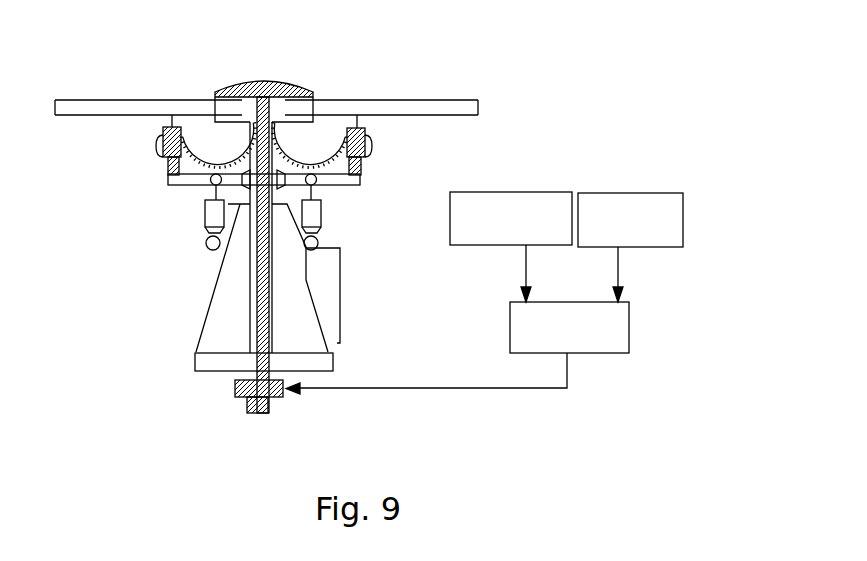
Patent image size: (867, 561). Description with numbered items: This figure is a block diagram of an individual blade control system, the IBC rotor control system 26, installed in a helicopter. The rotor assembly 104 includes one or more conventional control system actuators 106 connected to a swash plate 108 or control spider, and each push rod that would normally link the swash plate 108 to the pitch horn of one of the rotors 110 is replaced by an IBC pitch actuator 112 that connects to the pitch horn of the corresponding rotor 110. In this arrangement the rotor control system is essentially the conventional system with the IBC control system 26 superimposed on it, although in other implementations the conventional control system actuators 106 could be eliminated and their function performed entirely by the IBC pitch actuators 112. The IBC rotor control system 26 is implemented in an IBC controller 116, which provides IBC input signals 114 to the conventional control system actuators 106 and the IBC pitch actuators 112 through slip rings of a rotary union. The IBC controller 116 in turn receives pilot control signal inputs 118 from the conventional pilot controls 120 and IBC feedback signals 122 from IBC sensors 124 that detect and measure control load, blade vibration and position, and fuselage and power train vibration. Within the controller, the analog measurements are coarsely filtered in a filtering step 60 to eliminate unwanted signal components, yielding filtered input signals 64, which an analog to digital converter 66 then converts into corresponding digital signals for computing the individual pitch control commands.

The IBC rotor control system 26 is at (740, 171).
The filtering step 60 is at (247, 318).
The filtered input signals 64 is at (307, 433).
The analog to digital converter 66 is at (297, 436).
The rotor assembly 104 is at (477, 155).
The control system actuators 106 is at (210, 222).
The swash plate 108 is at (343, 187).
The rotors 110 is at (137, 110).
The IBC pitch actuator 112 is at (163, 153).
The IBC input signals 114 is at (455, 388).
The IBC controller 116 is at (630, 340).
The pilot control signal inputs 118 is at (622, 272).
The pilot controls 120 is at (625, 193).
The IBC feedback signals 122 is at (523, 272).
The IBC sensors 124 is at (522, 192).